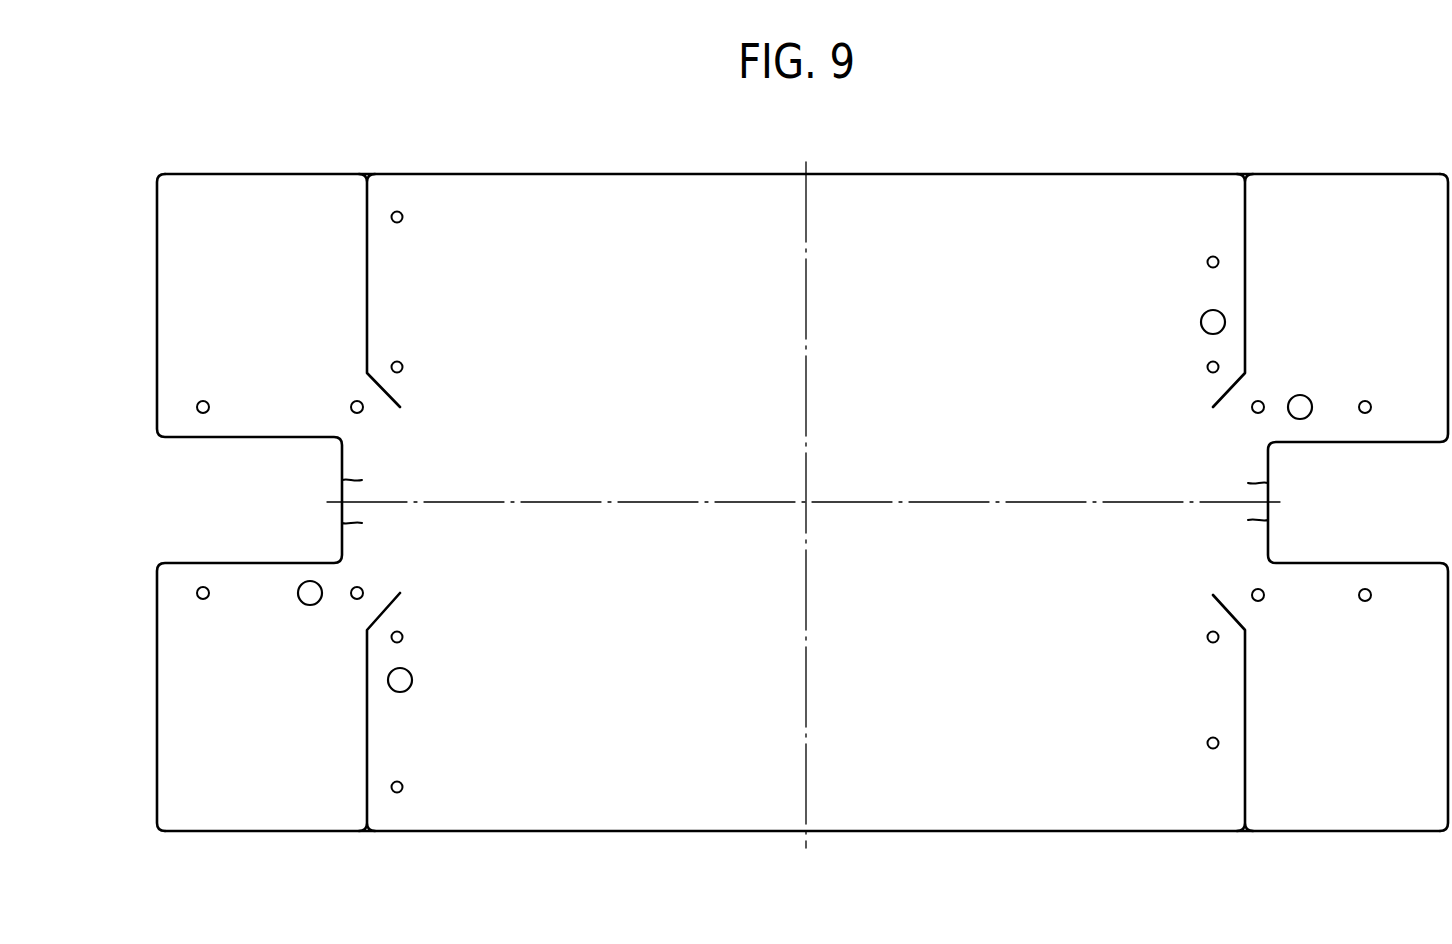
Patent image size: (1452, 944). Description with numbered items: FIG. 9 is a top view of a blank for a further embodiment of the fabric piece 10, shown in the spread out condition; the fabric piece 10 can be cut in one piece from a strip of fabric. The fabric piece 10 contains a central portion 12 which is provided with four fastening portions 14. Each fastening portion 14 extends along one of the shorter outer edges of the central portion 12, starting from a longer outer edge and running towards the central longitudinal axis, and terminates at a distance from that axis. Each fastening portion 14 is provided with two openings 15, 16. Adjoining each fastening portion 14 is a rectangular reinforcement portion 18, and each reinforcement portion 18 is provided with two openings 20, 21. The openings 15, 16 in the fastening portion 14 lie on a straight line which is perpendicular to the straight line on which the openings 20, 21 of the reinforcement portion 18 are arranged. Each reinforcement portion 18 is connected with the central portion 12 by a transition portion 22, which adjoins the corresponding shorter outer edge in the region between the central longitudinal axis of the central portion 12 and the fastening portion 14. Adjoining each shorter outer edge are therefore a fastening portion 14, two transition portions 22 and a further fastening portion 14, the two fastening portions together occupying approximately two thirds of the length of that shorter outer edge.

The fabric piece 10 is at (1000, 163).
The central portion 12 is at (955, 802).
The fastening portion 14 is at (384, 200).
The opening 15 is at (403, 217).
The opening 16 is at (403, 367).
The reinforcement portion 18 is at (218, 200).
The opening 20 is at (205, 401).
The opening 21 is at (353, 402).
The transition portion 22 is at (330, 506).